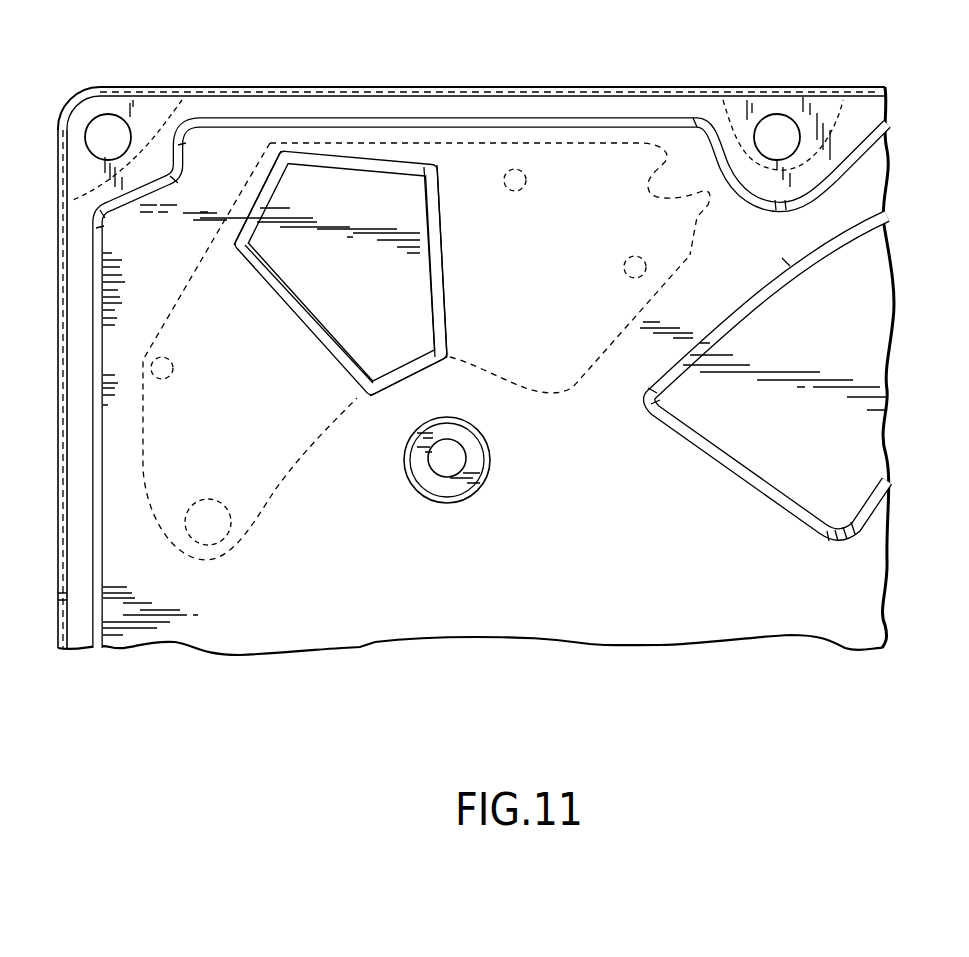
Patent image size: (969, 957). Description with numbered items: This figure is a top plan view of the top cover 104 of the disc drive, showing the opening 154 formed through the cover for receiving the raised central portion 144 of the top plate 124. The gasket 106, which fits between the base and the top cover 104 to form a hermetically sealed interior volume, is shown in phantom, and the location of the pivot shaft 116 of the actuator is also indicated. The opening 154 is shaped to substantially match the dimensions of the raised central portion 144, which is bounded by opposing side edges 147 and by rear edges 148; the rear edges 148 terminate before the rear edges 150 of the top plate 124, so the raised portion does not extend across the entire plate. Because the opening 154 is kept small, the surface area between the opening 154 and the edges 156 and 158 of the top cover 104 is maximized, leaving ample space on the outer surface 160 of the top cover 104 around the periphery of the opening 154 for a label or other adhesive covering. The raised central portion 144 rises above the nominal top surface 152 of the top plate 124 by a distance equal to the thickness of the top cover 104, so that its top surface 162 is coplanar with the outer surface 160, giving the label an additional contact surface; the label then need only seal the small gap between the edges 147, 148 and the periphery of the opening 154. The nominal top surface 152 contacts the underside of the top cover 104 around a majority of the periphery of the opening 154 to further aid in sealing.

The top cover 104 is at (723, 67).
The gasket 106 is at (160, 118).
The pivot shaft 116 is at (447, 468).
The top plate 124 is at (556, 393).
The raised central portion 144 is at (397, 328).
The side edges 147 is at (440, 247).
The rear edges 148 is at (390, 167).
The rear edges of the top plate 150 is at (362, 143).
The nominal top surface 152 is at (265, 287).
The opening 154 is at (440, 208).
The edge of the top cover 156 is at (323, 87).
The edge of the top cover 158 is at (57, 200).
The outer surface 160 is at (198, 348).
The top surface of the raised central portion 162 is at (383, 353).